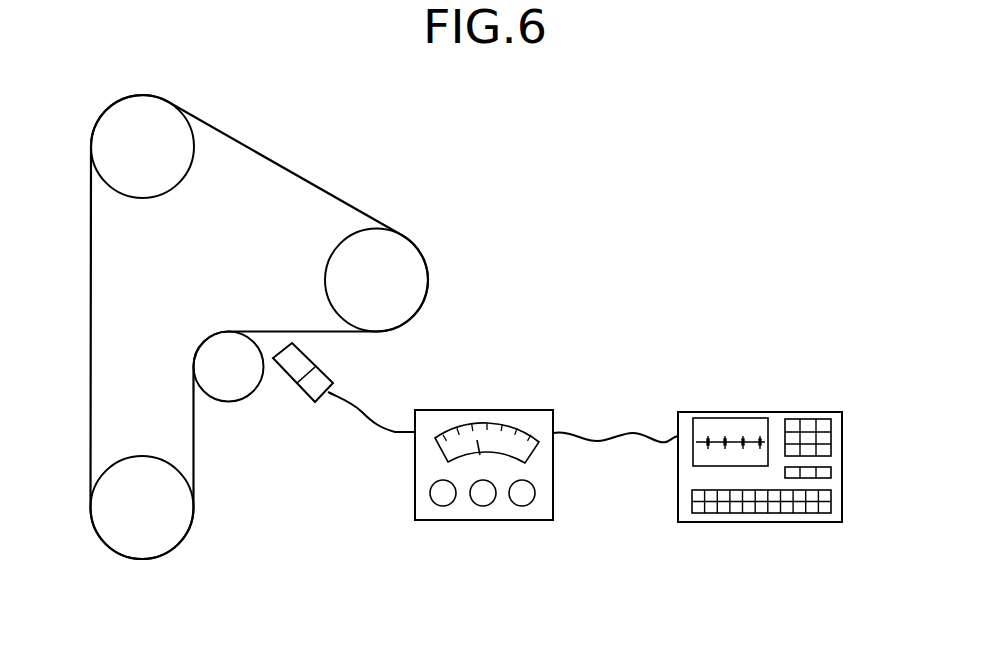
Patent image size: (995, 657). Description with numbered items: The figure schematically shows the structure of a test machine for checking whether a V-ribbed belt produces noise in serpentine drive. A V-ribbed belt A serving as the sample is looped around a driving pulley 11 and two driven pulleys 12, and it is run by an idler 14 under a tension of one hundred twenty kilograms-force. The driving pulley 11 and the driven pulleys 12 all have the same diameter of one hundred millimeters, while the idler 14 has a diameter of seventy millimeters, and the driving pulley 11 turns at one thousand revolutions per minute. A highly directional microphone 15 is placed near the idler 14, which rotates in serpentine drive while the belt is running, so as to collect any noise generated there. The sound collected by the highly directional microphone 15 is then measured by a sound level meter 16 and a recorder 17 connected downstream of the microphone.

The V-ribbed belt A is at (90, 279).
The driving pulley 11 is at (133, 472).
The driven pulleys 12 is at (173, 177).
The idler 14 is at (229, 392).
The highly directional microphone 15 is at (303, 392).
The sound level meter 16 is at (493, 520).
The recorder 17 is at (703, 412).